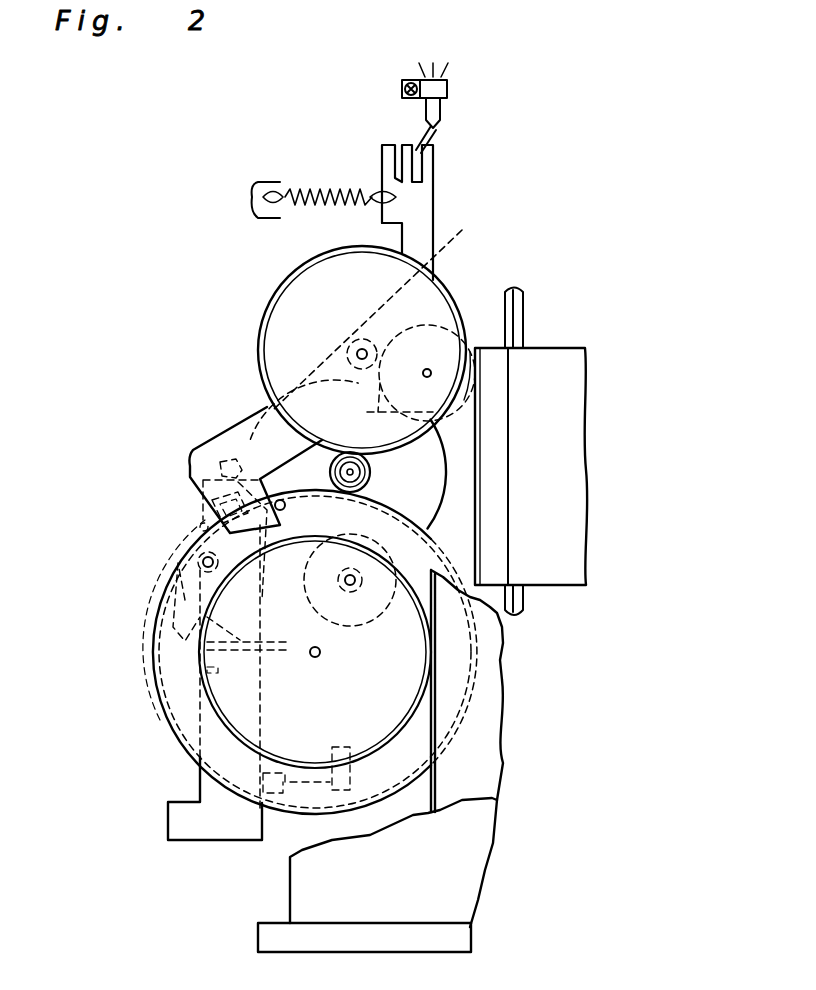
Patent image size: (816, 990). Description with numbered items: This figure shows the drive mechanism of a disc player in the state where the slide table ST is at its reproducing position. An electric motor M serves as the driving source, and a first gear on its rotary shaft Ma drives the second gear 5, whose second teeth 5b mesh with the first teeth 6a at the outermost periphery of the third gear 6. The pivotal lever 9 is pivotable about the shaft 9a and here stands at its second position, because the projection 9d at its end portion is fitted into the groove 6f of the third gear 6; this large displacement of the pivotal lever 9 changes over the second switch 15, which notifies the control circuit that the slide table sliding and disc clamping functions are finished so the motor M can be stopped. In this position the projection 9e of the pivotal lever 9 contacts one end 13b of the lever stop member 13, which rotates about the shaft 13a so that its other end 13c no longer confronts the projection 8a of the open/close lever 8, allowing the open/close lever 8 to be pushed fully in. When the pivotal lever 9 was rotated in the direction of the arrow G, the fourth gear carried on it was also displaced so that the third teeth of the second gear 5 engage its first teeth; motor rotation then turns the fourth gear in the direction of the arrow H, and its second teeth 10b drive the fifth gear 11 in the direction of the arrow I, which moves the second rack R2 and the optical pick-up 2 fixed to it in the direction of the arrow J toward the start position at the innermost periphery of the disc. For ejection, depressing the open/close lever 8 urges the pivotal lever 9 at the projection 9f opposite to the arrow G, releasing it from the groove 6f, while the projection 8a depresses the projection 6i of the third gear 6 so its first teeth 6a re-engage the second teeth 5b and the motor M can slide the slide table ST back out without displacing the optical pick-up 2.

The second switch 15 is at (443, 118).
The arrow H is at (350, 278).
The second teeth 10b is at (348, 357).
The arrow G is at (217, 406).
The shaft 9a is at (427, 370).
The second gear 5 is at (240, 437).
The second teeth 5b is at (372, 478).
The pivotal lever 9 is at (193, 467).
The projection 9f is at (222, 467).
The projection 9d is at (230, 515).
The one end 13b is at (232, 533).
The projection 9e is at (286, 506).
The groove 6f is at (203, 527).
The third gear 6 is at (156, 690).
The projection 8a is at (173, 713).
The electric motor M is at (390, 607).
The rotary shaft Ma is at (341, 592).
The lever stop member 13 is at (173, 603).
The shaft 13a is at (200, 560).
The projection 6i is at (207, 617).
The first teeth 6a is at (207, 642).
The other end 13c is at (157, 663).
The open/close lever 8 is at (170, 823).
The slide table ST is at (290, 870).
The fifth gear 11 is at (475, 348).
The optical pick-up 2 is at (560, 582).
The second rack R2 is at (470, 539).
The arrow J is at (550, 422).
The arrow I is at (489, 310).